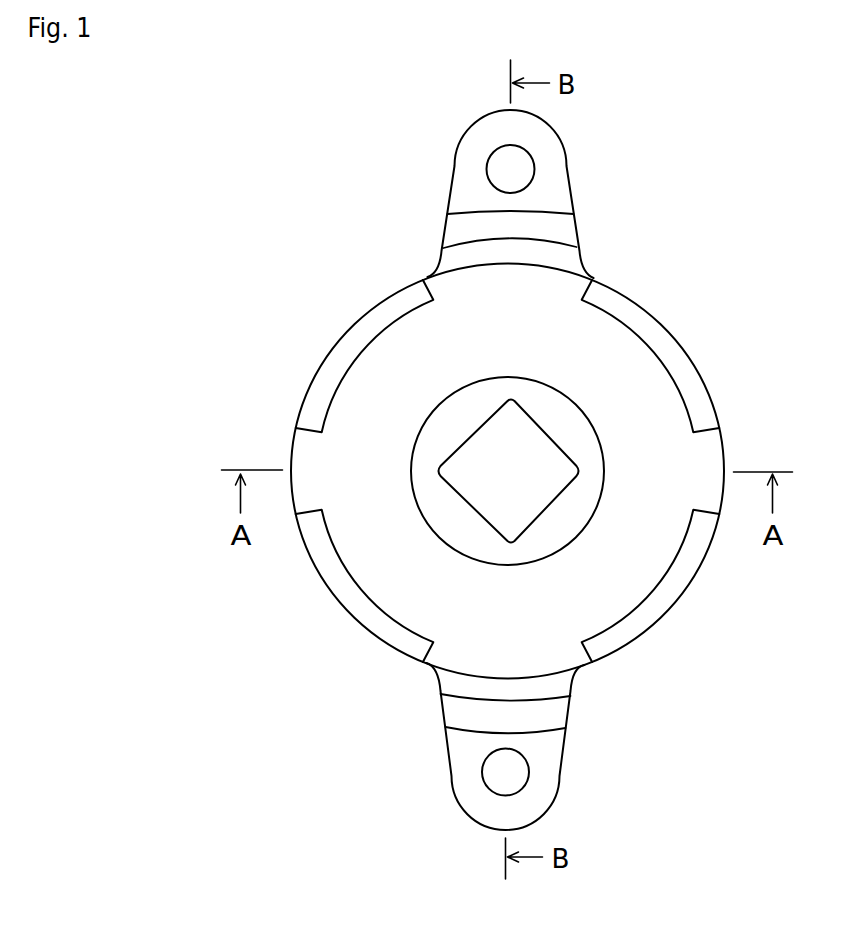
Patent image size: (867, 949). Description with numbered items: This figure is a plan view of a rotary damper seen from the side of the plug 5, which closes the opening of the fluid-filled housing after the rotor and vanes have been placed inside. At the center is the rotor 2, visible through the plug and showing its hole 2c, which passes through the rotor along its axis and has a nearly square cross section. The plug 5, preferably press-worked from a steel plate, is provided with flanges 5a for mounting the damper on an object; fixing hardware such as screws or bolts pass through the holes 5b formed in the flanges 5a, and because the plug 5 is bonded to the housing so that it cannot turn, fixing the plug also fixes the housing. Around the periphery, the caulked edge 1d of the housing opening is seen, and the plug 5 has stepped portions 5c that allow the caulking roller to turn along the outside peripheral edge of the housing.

The edge of the opening of the housing 1d is at (347, 339).
The rotor 2 is at (585, 440).
The hole 2c is at (476, 458).
The plug 5 is at (635, 385).
The flange 5a is at (553, 173).
The hole 5b is at (500, 168).
The stepped portion 5c is at (540, 252).